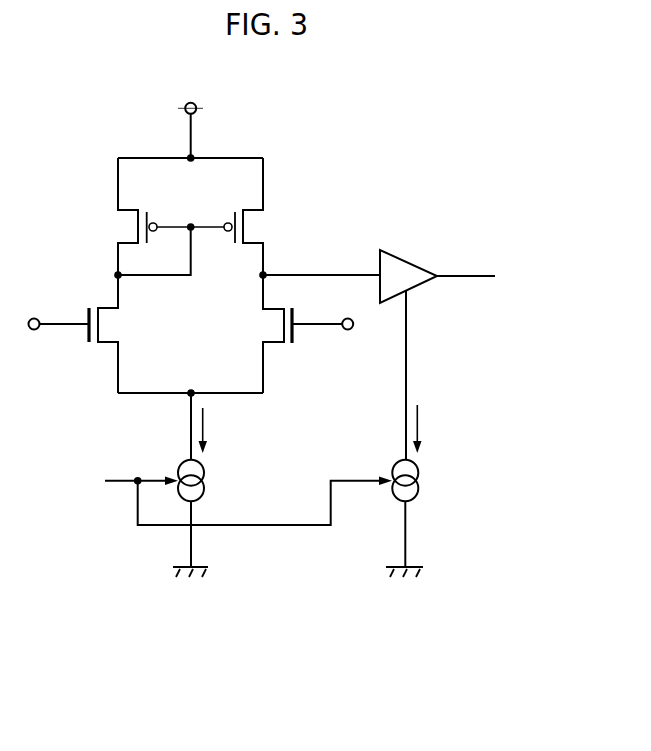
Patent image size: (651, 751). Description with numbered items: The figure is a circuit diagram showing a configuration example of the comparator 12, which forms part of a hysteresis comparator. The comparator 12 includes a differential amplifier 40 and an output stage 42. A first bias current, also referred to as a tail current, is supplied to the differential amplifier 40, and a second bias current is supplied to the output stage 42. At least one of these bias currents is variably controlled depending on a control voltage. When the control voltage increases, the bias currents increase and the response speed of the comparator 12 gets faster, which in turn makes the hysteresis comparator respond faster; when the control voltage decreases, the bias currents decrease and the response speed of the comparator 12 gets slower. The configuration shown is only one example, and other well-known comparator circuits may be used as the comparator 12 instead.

The comparator 12 is at (240, 643).
The differential amplifier 40 is at (407, 258).
The output stage 42 is at (194, 104).